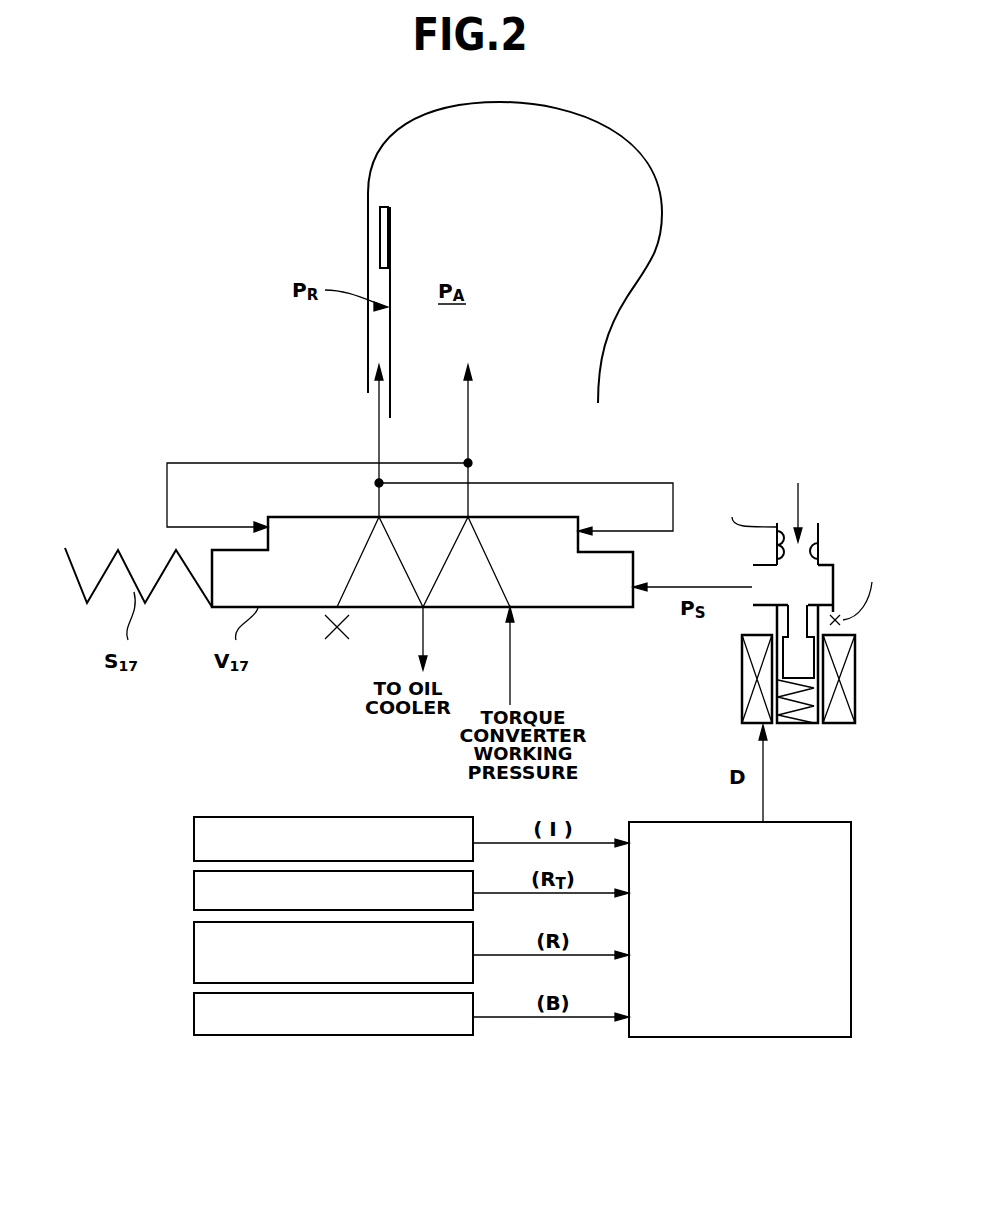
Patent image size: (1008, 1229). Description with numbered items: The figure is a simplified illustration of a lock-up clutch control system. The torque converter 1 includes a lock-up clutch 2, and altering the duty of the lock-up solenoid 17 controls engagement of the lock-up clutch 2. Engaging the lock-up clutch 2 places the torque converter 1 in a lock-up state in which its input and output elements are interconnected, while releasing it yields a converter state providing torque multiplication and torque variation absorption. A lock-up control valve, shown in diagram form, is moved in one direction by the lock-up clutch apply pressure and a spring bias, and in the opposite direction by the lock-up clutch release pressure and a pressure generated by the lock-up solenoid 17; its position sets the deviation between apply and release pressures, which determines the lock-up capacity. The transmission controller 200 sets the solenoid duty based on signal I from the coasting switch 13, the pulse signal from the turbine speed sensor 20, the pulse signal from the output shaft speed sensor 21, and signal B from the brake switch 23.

The torque converter 1 is at (364, 139).
The lock-up clutch 2 is at (388, 209).
The lock-up solenoid 17 is at (827, 565).
The coasting switch 13 is at (194, 836).
The turbine speed sensor 20 is at (194, 890).
The output shaft speed sensor 21 is at (194, 947).
The brake switch 23 is at (194, 1012).
The transmission controller 200 is at (795, 822).